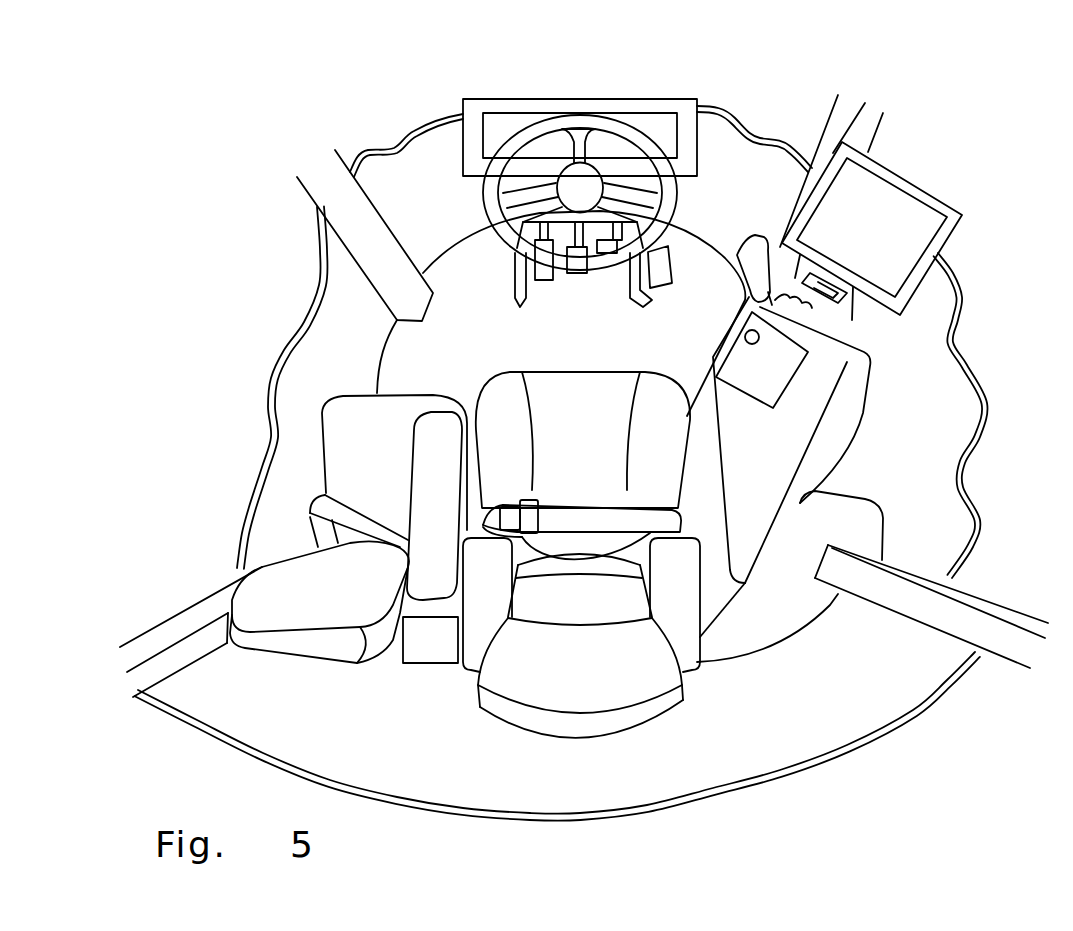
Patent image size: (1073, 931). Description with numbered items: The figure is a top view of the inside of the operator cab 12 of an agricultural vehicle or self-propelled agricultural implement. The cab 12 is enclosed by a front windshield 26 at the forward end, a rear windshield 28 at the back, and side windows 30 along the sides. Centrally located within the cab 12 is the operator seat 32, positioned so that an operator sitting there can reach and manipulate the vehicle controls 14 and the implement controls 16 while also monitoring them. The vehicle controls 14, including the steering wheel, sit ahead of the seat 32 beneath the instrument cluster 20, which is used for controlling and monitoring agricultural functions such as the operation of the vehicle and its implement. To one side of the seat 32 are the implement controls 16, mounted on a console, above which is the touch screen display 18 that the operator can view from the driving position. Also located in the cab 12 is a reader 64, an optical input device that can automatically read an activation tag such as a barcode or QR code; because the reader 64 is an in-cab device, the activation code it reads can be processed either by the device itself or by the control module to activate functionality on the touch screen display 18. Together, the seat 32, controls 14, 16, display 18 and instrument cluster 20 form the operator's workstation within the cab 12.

The operator cab 12 is at (252, 392).
The vehicle controls 14 is at (592, 183).
The implement controls 16 is at (870, 348).
The touch screen display 18 is at (895, 212).
The instrument cluster 20 is at (663, 118).
The front windshield 26 is at (420, 190).
The rear windshield 28 is at (868, 738).
The side windows 30 is at (315, 272).
The operator seat 32 is at (592, 469).
The reader 64 is at (845, 296).